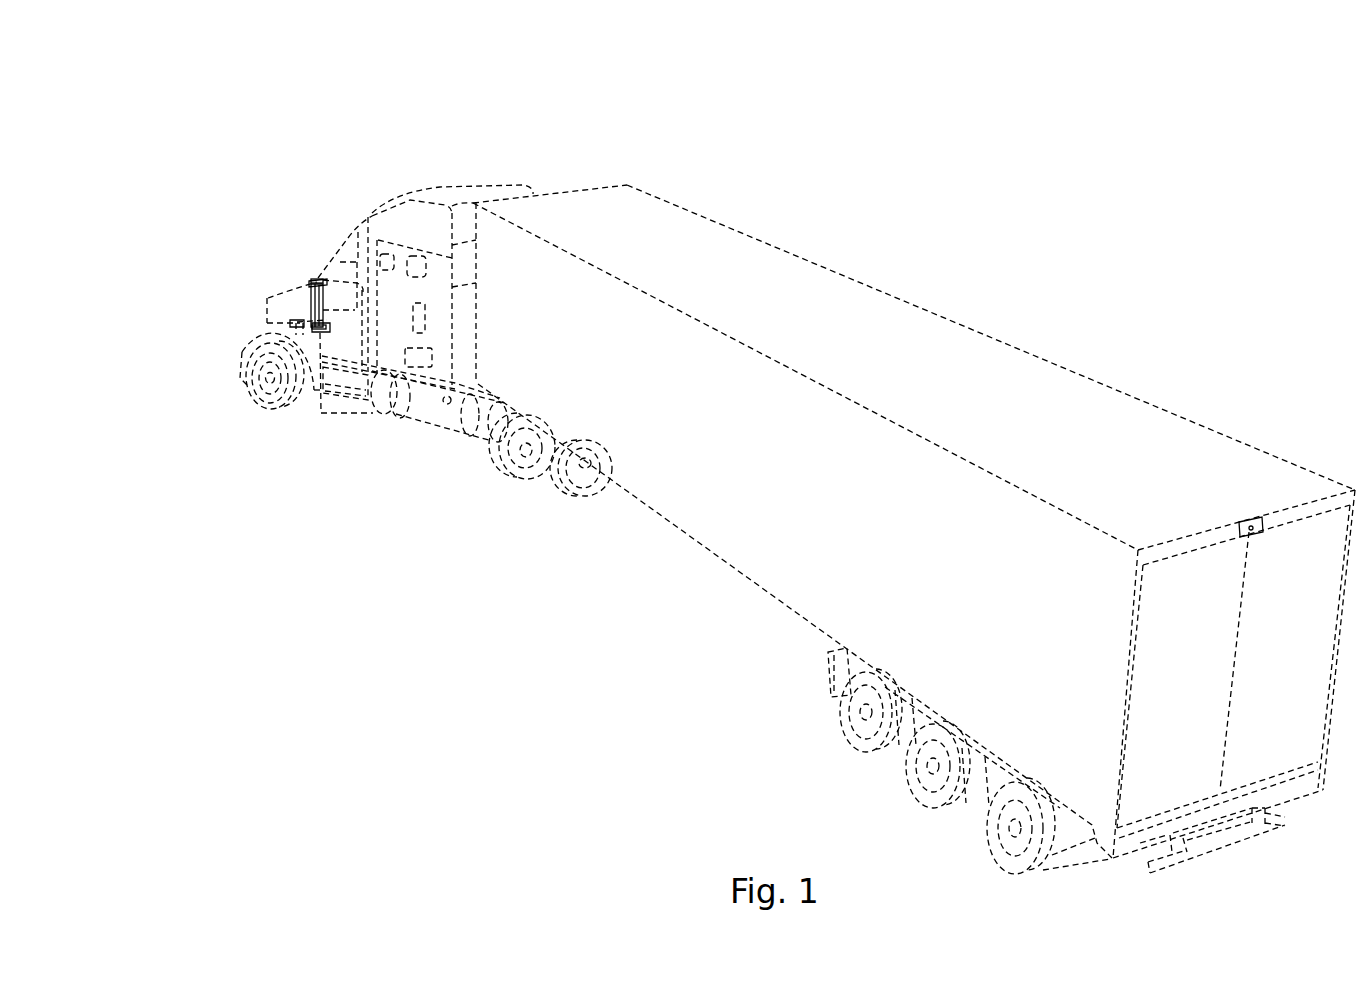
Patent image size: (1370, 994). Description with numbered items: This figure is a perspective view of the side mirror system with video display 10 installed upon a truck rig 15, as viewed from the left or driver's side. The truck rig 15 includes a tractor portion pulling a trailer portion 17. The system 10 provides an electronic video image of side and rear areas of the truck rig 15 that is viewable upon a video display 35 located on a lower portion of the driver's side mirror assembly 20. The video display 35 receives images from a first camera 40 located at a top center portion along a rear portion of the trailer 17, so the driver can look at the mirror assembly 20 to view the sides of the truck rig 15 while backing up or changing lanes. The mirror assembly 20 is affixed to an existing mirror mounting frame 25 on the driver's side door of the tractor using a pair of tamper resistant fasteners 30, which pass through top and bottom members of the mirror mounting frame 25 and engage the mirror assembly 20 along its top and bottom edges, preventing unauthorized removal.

The side mirror system with video display 10 is at (283, 158).
The truck rig 15 is at (539, 515).
The trailer portion 17 is at (915, 348).
The driver's side mirror assembly 20 is at (316, 307).
The mirror mounting frame 25 is at (317, 281).
The tamper resistant fasteners 30 is at (316, 279).
The video display 35 is at (319, 327).
The first camera 40 is at (1258, 523).